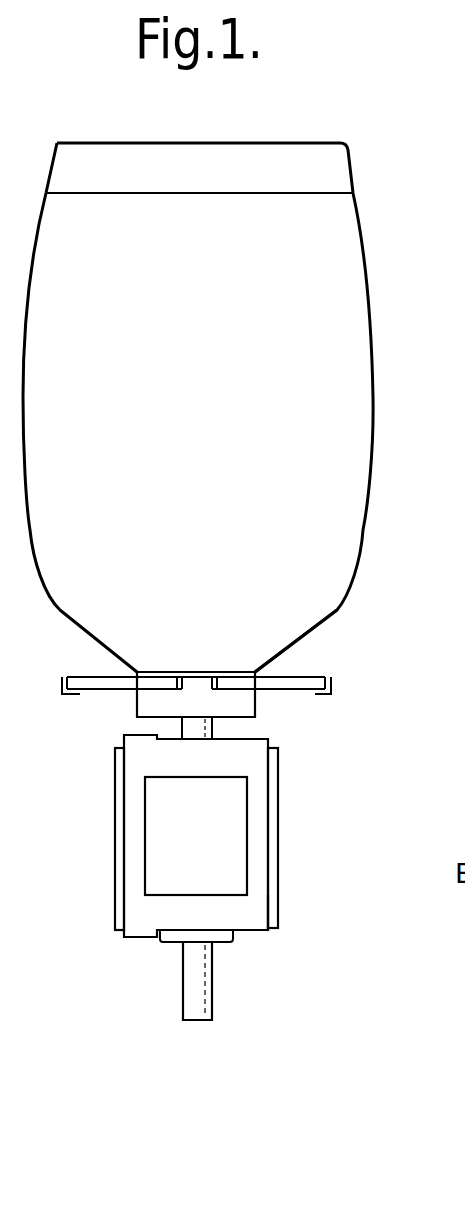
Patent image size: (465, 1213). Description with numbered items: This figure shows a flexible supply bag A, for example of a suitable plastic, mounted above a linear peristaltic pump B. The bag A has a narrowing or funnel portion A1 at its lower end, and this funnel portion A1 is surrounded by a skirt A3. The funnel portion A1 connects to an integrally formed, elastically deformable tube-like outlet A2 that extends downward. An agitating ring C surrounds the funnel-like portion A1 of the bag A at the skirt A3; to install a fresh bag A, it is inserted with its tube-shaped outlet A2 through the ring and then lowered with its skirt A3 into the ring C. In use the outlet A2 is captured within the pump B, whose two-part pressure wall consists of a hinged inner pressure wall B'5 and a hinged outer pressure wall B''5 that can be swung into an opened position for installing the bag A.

The flexible supply bag A is at (368, 508).
The funnel portion A1 is at (325, 622).
The tubelike outlet A2 is at (197, 995).
The skirt A3 is at (248, 697).
The agitating ring C is at (100, 681).
The lineary peristaltic pump B is at (150, 848).
The hinged inner pressure wall B'5 is at (239, 839).
The hinged outer pressure wall B''5 is at (260, 924).